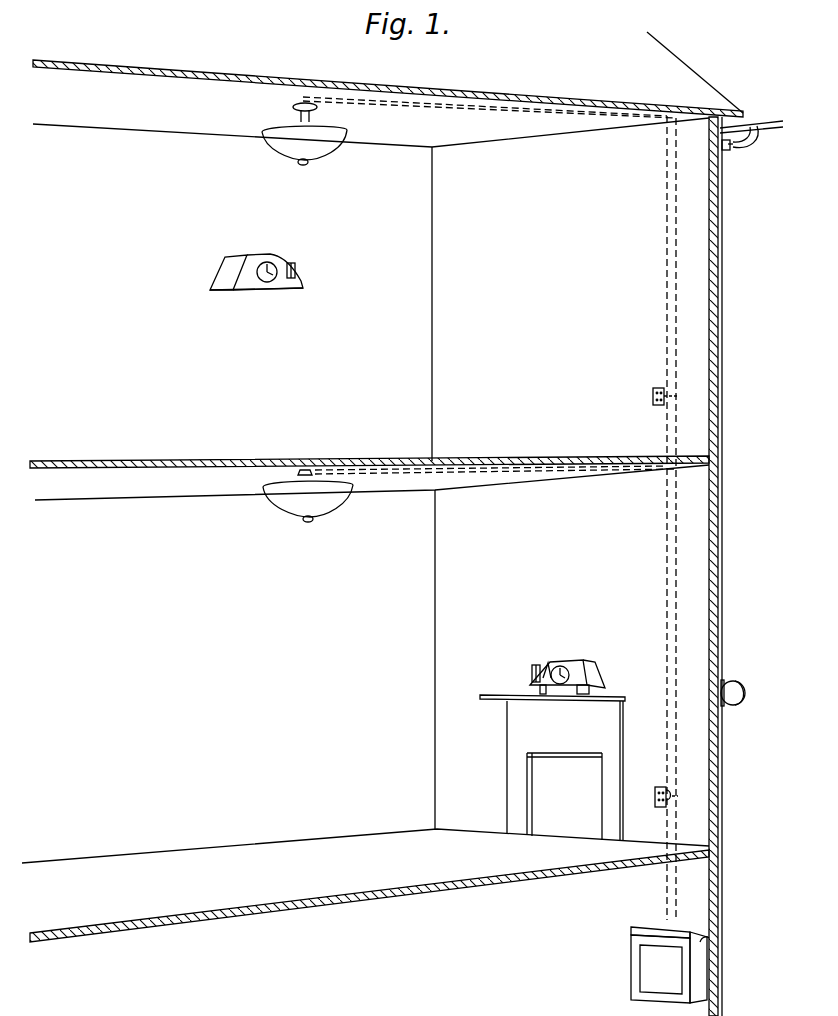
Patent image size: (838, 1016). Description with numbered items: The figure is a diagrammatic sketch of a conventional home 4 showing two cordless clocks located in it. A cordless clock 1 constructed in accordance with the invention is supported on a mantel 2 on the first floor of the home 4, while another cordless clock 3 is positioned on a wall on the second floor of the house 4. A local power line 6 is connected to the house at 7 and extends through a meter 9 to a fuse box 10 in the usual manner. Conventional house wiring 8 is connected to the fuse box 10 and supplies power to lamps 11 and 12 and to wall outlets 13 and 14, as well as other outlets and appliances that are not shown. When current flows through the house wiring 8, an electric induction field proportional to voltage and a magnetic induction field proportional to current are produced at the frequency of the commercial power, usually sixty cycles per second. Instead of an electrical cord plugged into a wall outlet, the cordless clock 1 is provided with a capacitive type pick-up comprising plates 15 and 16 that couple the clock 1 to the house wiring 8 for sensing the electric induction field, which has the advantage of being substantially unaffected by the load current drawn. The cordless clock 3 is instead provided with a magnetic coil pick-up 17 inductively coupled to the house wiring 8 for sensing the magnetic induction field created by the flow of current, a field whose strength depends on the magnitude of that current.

The cordless clock 1 is at (597, 668).
The mantel 2 is at (490, 699).
The cordless clock 3 is at (226, 263).
The conventional home 4 is at (697, 82).
The local power line 6 is at (779, 120).
The house connection point 7 is at (726, 150).
The house wiring 8 is at (680, 881).
The meter 9 is at (738, 682).
The fuse box 10 is at (631, 962).
The lamp 11 is at (285, 506).
The lamp 12 is at (280, 153).
The wall outlet 13 is at (653, 392).
The wall outlet 14 is at (655, 795).
The plate 15 is at (532, 672).
The plate 16 is at (548, 664).
The magnetic coil pick-up 17 is at (298, 271).